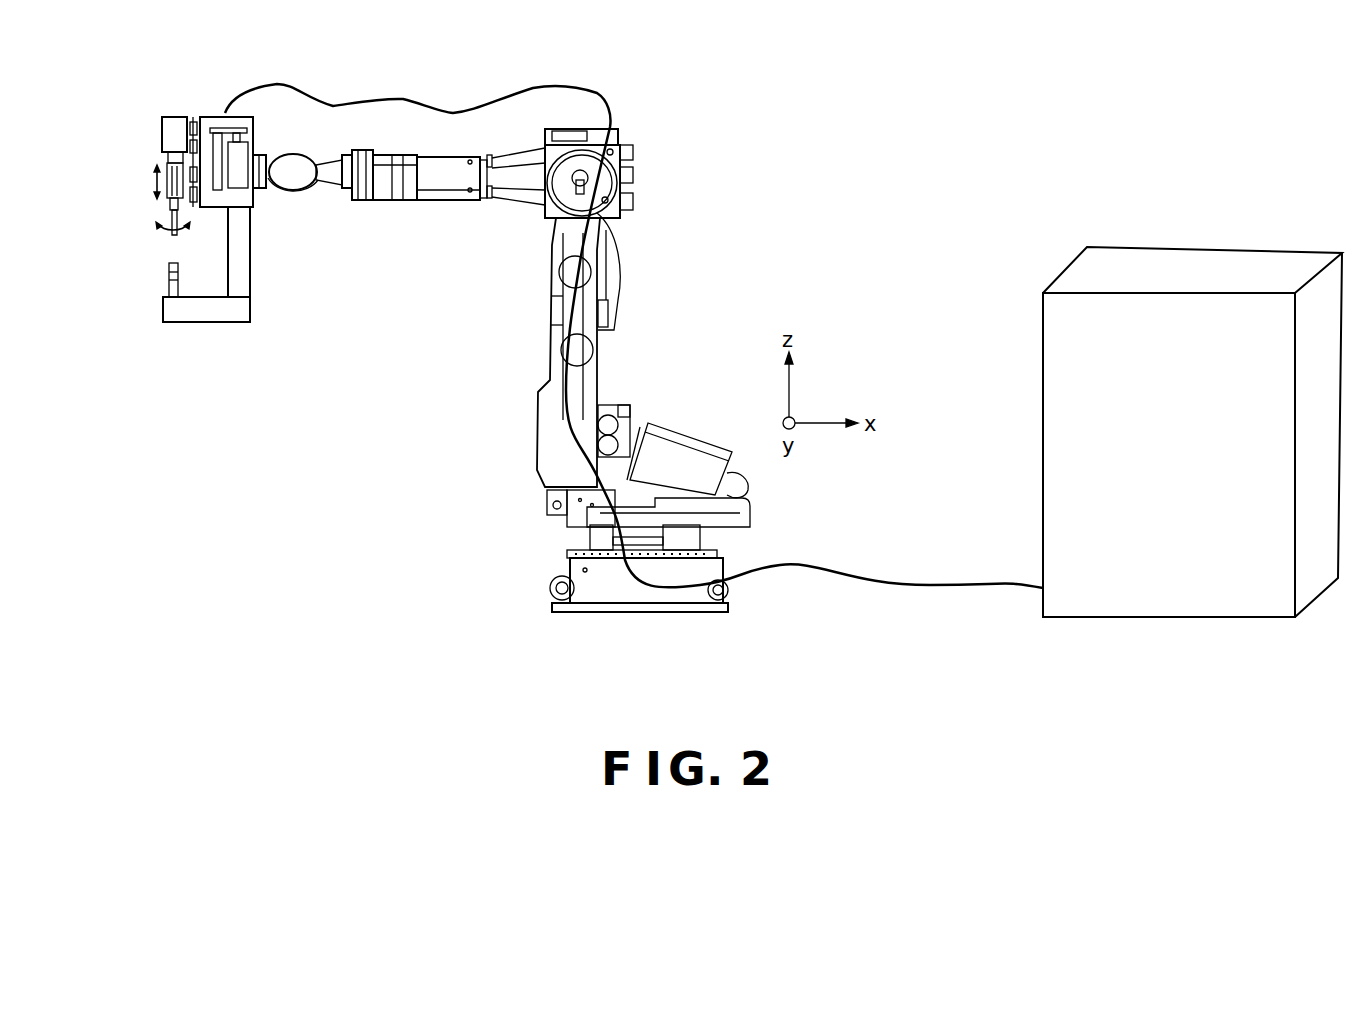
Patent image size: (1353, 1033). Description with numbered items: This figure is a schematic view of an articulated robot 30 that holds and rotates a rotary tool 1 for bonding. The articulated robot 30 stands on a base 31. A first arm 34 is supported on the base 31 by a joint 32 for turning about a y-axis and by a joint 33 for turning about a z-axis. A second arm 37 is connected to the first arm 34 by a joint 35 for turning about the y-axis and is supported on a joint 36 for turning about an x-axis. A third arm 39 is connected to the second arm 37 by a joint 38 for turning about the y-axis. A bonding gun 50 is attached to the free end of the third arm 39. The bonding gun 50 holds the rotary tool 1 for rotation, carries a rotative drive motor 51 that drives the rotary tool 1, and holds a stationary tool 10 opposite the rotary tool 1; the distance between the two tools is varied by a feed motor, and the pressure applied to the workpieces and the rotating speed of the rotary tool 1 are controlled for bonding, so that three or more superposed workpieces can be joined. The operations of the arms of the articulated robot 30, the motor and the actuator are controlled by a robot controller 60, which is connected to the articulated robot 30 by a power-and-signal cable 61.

The rotary tool 1 is at (168, 240).
The stationary tool 10 is at (168, 268).
The articulated robot 30 is at (641, 271).
The base 31 is at (607, 597).
The joint 32 is at (553, 489).
The joint 33 is at (590, 535).
The first arm 34 is at (588, 336).
The joint 35 is at (625, 183).
The joint 36 is at (356, 200).
The second arm 37 is at (455, 190).
The joint 38 is at (312, 195).
The third arm 39 is at (262, 190).
The bonding gun 50 is at (205, 318).
The rotative drive motor 51 is at (162, 131).
The robot controller 60 is at (1133, 605).
The power-and-signal cable 61 is at (559, 83).